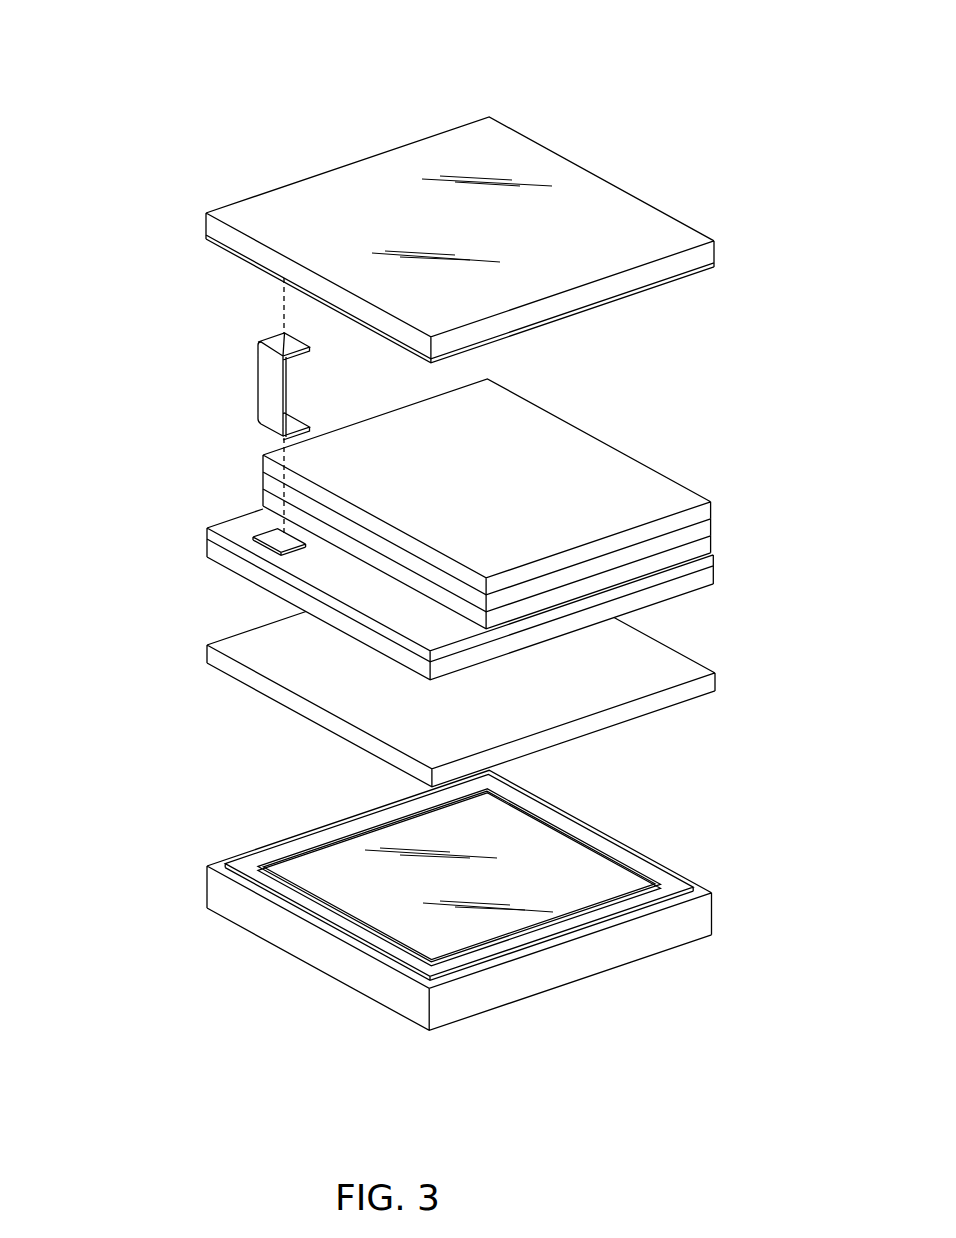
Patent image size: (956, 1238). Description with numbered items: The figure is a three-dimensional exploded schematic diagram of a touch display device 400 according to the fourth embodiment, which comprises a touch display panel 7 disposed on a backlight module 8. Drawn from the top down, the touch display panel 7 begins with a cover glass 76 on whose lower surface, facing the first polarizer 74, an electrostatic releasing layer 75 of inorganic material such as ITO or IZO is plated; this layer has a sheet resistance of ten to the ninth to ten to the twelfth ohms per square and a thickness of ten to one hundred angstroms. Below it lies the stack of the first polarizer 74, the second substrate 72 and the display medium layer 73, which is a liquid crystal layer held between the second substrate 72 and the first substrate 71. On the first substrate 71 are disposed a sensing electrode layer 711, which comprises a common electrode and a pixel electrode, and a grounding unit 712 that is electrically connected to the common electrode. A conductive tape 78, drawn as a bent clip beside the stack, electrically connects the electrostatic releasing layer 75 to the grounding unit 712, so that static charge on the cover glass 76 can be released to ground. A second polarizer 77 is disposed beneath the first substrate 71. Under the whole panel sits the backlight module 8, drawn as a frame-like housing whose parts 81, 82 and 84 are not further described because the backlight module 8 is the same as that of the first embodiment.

The touch display device 400 is at (52, 59).
The touch display panel 7 is at (101, 190).
The cover glass 76 is at (206, 225).
The electrostatic releasing layer 75 is at (207, 240).
The conductive tape 78 is at (258, 392).
The first polarizer 74 is at (262, 467).
The second substrate 72 is at (262, 483).
The display medium layer 73 is at (262, 501).
The grounding unit 712 is at (258, 514).
The sensing electrode layer 711 is at (207, 533).
The first substrate 71 is at (207, 555).
The second polarizer 77 is at (208, 655).
The backlight module 8 is at (127, 792).
The transparent window 84 is at (332, 865).
The frame 82 is at (253, 861).
The base housing 81 is at (220, 895).